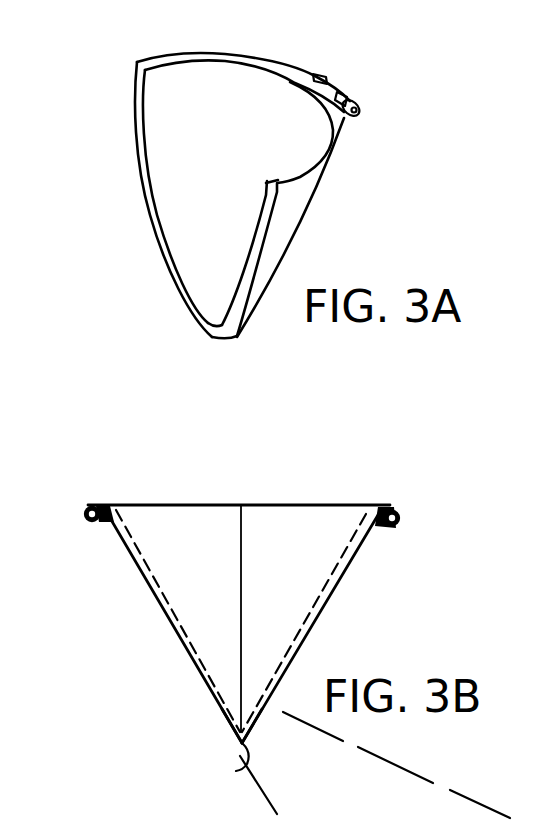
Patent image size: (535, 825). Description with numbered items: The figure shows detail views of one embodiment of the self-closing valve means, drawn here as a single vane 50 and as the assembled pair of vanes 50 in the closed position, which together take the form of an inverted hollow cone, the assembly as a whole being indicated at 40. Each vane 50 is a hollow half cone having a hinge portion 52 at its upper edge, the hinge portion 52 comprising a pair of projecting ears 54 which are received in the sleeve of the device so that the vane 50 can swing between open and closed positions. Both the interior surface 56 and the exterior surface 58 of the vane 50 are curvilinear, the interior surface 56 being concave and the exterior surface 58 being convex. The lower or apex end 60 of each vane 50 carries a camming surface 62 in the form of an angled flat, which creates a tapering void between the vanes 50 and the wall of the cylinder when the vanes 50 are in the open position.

In FIG. 3B, the funnel blank assembly 40 is at (356, 623).
In FIG. 3A, the vane 50 is at (316, 190).
In FIG. 3B, the vane 50 is at (172, 633).
In FIG. 3A, the hinge portion 52 is at (350, 78).
In FIG. 3A, the projecting ear 54 is at (318, 74).
In FIG. 3B, the projecting ear 54 is at (402, 515).
In FIG. 3A, the interior surface 56 is at (204, 148).
In FIG. 3B, the interior surface 56 is at (167, 595).
In FIG. 3A, the exterior surface 58 is at (283, 222).
In FIG. 3A, the apex end 60 is at (225, 341).
In FIG. 3B, the apex end 60 is at (248, 767).
In FIG. 3B, the camming surface 62 is at (222, 715).